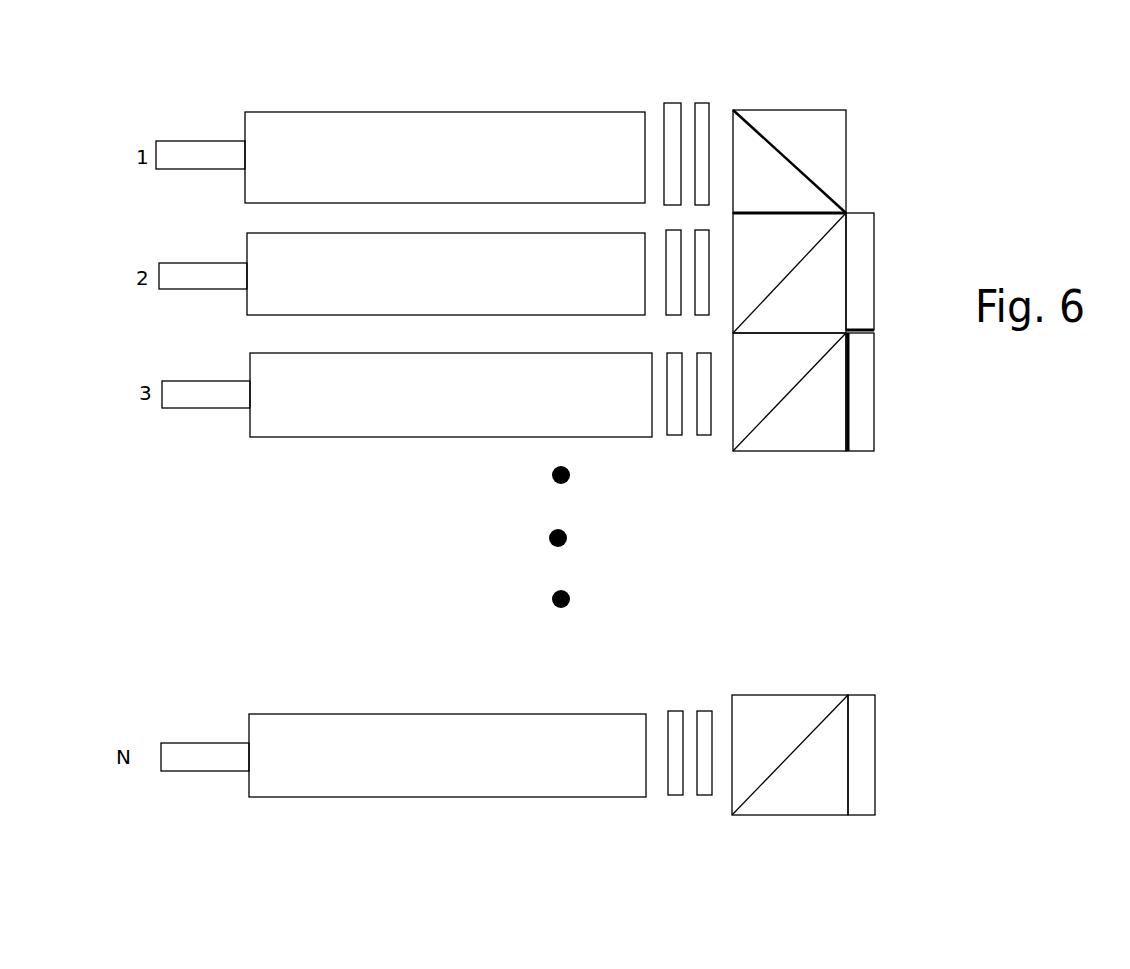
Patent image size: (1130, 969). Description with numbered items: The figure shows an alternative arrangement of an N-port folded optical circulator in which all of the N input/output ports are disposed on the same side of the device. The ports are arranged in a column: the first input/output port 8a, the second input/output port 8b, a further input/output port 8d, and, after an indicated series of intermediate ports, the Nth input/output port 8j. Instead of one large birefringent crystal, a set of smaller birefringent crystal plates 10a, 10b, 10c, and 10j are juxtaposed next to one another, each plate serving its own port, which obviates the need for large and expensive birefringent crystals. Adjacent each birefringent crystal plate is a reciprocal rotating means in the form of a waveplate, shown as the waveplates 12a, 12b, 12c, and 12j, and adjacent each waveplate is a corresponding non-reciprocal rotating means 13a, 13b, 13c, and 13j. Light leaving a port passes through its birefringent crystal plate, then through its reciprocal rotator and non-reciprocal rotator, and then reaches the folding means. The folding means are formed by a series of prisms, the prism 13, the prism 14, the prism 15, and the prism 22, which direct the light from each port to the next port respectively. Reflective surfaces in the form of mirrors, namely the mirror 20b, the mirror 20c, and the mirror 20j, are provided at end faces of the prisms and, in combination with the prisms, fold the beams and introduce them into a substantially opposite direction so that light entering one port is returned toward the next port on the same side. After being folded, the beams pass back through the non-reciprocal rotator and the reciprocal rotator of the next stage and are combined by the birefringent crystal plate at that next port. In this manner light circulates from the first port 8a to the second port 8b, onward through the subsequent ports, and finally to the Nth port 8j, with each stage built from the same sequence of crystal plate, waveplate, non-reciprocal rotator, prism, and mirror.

The first input/output port 8a is at (195, 139).
The second input/output port 8b is at (182, 260).
The input/output port 8d is at (185, 378).
The Nth input/output port 8j is at (187, 740).
The birefringent crystal plate 10a is at (373, 110).
The birefringent crystal plate 10b is at (513, 314).
The birefringent crystal plate 10c is at (307, 435).
The birefringent crystal plate 10j is at (315, 797).
The reciprocal rotating means 12a is at (660, 103).
The reciprocal rotating means 12b is at (662, 232).
The reciprocal rotating means 12c is at (670, 435).
The reciprocal rotating means 12j is at (672, 796).
The non-reciprocal rotating means 13a is at (698, 105).
The non-reciprocal rotating means 13b is at (707, 317).
The non-reciprocal rotating means 13c is at (702, 435).
The non-reciprocal rotating means 13j is at (700, 796).
The prism 13 is at (846, 131).
The prism 14 is at (733, 238).
The prism 15 is at (737, 362).
The prism 22 is at (737, 705).
The reflective surface 20b is at (874, 237).
The reflective surface 20c is at (874, 347).
The reflective surface 20j is at (875, 717).